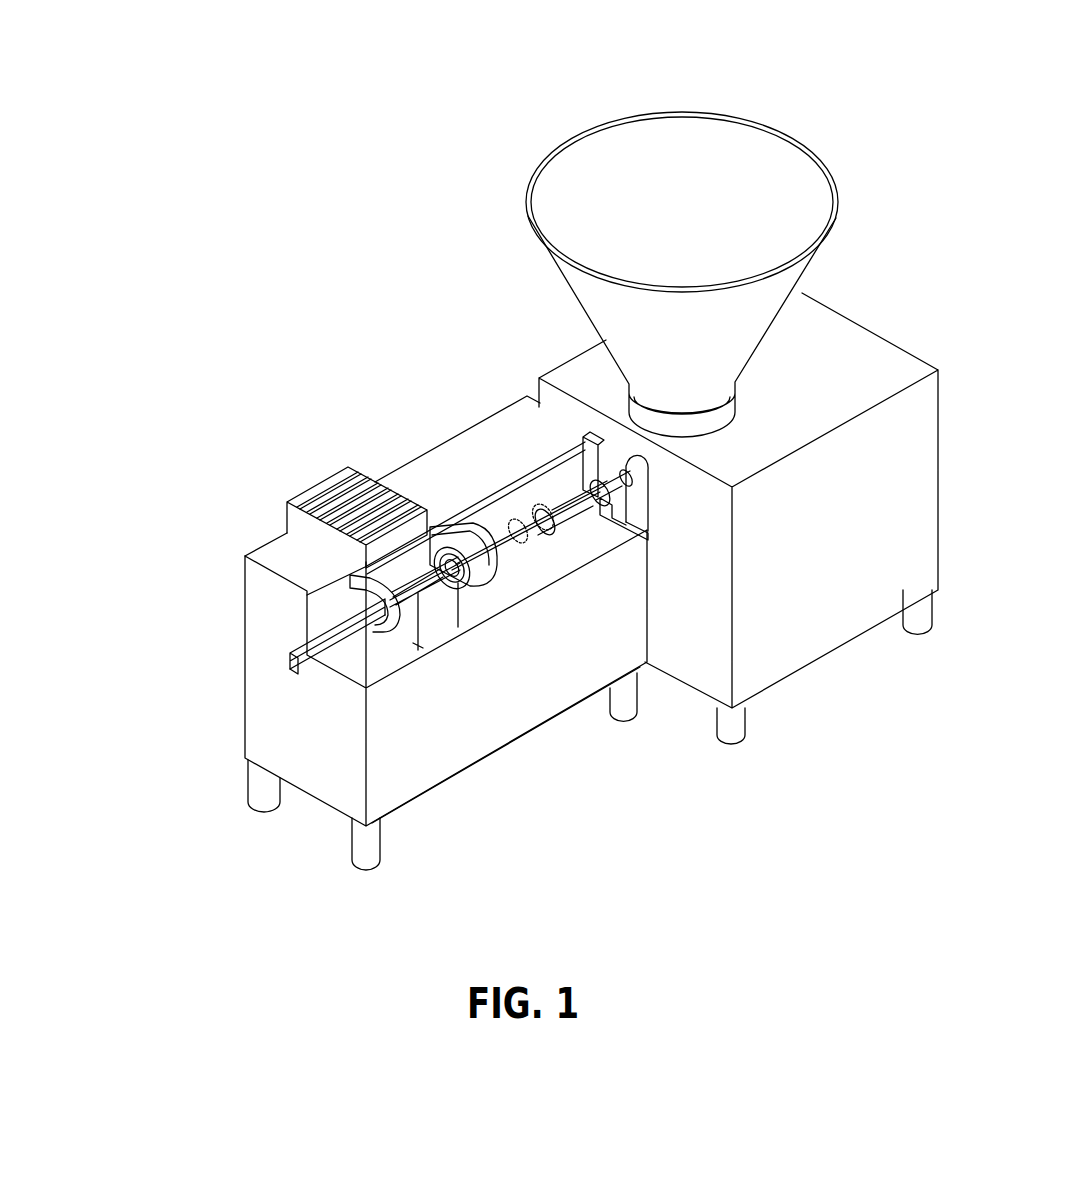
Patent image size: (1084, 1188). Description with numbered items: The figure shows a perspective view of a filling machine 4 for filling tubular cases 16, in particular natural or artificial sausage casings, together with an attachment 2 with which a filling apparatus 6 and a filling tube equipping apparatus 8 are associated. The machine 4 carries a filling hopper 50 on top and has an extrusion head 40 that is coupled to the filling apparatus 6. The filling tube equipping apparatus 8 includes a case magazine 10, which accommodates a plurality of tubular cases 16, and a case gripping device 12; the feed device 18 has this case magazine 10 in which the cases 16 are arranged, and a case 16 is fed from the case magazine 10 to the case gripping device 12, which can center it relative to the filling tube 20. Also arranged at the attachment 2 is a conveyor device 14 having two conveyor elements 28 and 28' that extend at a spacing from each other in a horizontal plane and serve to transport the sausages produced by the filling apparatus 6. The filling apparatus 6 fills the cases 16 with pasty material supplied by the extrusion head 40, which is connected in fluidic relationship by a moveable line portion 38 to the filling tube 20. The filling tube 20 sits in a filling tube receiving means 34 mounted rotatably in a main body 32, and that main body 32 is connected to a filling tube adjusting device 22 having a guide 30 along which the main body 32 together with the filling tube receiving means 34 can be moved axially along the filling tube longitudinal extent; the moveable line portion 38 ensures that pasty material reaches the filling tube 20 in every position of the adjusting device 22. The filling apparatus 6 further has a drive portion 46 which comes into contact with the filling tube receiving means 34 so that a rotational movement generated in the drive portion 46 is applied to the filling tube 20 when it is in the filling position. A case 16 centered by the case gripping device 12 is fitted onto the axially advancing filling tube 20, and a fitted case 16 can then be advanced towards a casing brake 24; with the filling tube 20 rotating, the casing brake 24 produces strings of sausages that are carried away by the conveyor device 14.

The attachment 2 is at (415, 563).
The filling machine 4 is at (903, 290).
The filling apparatus 6 is at (530, 620).
The filling tube equipping apparatus 8 is at (450, 585).
The case magazine 10 is at (354, 430).
The case gripping device 12 is at (385, 652).
The conveyor device 14 is at (221, 636).
The tubular cases 16 is at (381, 490).
The feed device 18 is at (305, 600).
The filling tube 20 is at (505, 545).
The filling tube adjusting device 22 is at (533, 452).
The casing brake 24 is at (362, 600).
The conveyor element 28 is at (223, 636).
The conveyor element 28' is at (221, 653).
The guide 30 is at (467, 484).
The main body 32 is at (600, 488).
The filling tube receiving means 34 is at (570, 503).
The moveable line portion 38 is at (620, 518).
The extrusion head 40 is at (641, 468).
The drive portion 46 is at (485, 584).
The filling hopper 50 is at (670, 196).